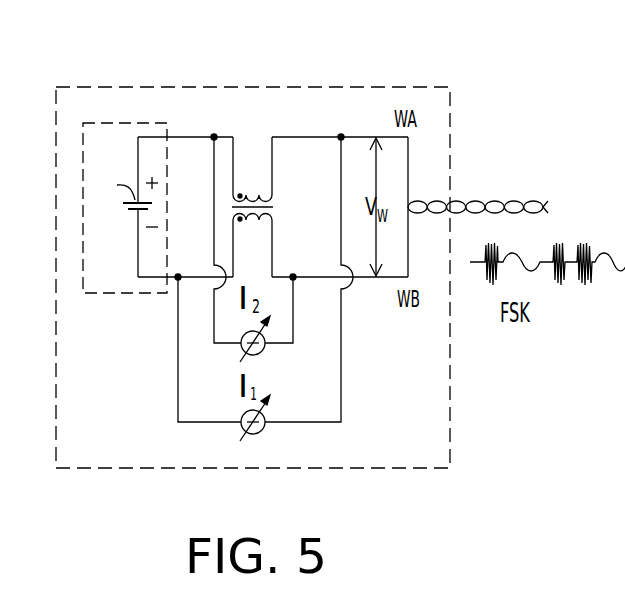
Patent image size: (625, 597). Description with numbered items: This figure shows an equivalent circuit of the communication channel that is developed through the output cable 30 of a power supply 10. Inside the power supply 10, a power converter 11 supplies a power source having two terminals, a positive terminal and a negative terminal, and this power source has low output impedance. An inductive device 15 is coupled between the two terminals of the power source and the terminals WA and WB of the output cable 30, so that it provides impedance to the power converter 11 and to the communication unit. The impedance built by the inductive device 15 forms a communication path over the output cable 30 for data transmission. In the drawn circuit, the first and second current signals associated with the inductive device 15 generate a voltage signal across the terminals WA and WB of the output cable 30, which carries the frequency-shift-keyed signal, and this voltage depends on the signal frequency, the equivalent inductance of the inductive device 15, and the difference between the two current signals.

The power supply 10 is at (362, 86).
The power converter 11 is at (118, 121).
The inductive device 15 is at (238, 194).
The output cable 30 is at (497, 200).